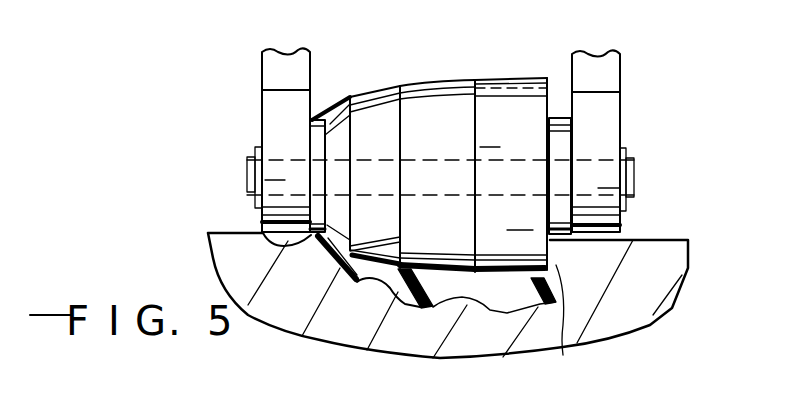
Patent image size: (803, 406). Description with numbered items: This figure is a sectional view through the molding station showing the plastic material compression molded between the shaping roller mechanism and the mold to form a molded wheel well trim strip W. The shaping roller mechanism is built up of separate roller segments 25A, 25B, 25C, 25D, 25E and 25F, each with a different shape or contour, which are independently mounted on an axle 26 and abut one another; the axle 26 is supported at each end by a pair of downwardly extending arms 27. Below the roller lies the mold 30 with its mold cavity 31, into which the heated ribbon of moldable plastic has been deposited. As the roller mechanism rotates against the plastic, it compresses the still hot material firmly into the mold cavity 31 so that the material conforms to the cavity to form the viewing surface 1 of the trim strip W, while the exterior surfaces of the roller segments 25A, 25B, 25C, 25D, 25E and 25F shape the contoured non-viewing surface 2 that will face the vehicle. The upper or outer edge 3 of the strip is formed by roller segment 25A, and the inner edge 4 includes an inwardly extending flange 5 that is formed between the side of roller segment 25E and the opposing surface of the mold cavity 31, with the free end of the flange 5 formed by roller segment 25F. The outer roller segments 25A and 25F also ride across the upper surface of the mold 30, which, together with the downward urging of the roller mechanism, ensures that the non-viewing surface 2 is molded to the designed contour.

The viewing surface 1 is at (380, 337).
The non-viewing surface 2 is at (409, 265).
The upper or outer edge 3 is at (256, 231).
The inner edge 4 is at (563, 350).
The inwardly extending flange 5 is at (553, 258).
The roller segment 25A is at (312, 120).
The roller segment 25B is at (330, 110).
The roller segment 25C is at (410, 80).
The roller segment 25D is at (468, 142).
The roller segment 25E is at (538, 142).
The roller segment 25F is at (560, 117).
The axle 26 is at (634, 180).
The downwardly extending arms 27 is at (262, 90).
The mold 30 is at (243, 265).
The mold cavity 31 is at (510, 317).
The wheel well trim strip W is at (472, 290).